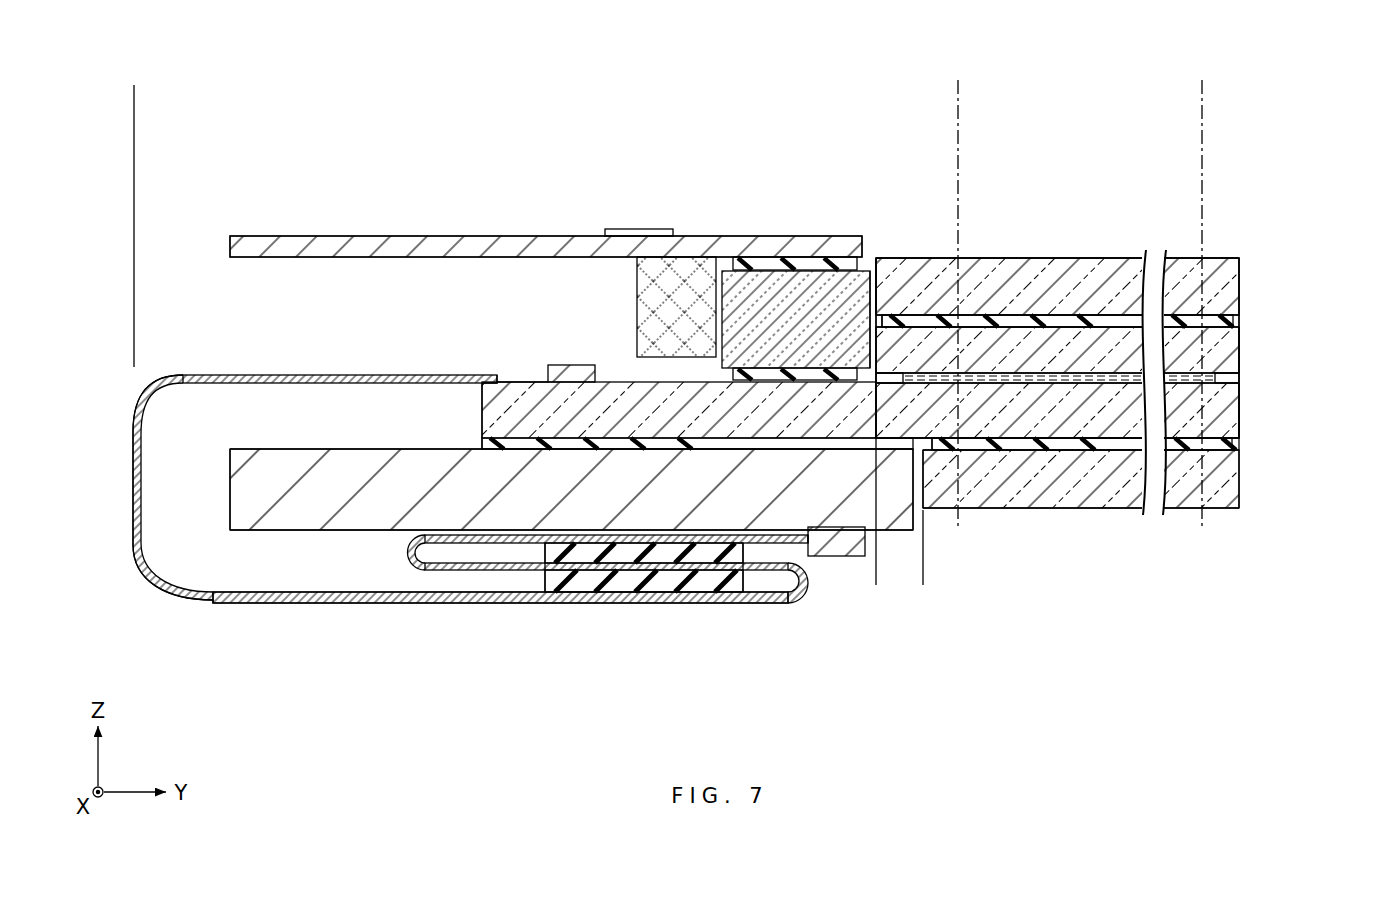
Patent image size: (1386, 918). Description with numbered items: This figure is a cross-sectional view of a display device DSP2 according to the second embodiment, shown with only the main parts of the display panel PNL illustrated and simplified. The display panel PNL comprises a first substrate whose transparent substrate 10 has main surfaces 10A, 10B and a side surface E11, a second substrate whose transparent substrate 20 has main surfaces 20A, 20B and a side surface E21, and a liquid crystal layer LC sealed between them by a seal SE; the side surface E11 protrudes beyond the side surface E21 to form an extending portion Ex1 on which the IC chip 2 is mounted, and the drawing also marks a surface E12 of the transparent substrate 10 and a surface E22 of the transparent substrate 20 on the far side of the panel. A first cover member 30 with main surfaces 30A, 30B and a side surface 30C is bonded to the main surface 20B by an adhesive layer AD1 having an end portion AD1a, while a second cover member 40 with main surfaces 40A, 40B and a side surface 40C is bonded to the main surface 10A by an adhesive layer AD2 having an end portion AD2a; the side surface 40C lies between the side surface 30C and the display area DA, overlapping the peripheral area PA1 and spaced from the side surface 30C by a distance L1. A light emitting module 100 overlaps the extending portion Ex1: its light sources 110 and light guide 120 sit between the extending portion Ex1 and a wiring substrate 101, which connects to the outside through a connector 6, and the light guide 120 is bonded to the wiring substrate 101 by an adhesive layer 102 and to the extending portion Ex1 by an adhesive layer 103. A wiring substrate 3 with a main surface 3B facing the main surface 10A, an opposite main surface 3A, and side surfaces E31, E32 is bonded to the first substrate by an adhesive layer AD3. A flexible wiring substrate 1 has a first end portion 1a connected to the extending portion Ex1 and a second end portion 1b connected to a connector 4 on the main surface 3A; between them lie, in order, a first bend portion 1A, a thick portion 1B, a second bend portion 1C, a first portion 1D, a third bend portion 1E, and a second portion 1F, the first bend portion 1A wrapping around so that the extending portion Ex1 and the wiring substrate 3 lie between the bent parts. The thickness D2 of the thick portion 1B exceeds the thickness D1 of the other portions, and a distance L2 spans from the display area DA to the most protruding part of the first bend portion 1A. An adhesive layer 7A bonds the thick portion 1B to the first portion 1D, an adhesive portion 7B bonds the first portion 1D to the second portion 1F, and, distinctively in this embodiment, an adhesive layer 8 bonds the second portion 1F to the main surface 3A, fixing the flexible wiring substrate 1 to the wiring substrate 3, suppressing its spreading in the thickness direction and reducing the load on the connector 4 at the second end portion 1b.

The flexible wiring substrate 1 is at (405, 376).
The first end portion 1a is at (488, 368).
The second end portion 1b is at (793, 548).
The first bend portion 1A is at (125, 375).
The thick portion 1B is at (214, 606).
The second bend portion 1C is at (811, 563).
The first portion 1D is at (713, 570).
The third bend portion 1E is at (406, 535).
The second portion 1F is at (477, 543).
The IC chip 2 is at (567, 364).
The wiring substrate 3 is at (310, 456).
The main surface 3A is at (355, 532).
The main surface 3B is at (348, 441).
The connector 4 is at (843, 558).
The connector 6 is at (637, 230).
The adhesive layer 7A is at (630, 584).
The adhesive portion 7B is at (582, 555).
The adhesive layer 8 is at (537, 543).
The transparent substrate 10 is at (1232, 421).
The main surface 10A is at (1123, 449).
The main surface 10B is at (1112, 381).
The transparent substrate 20 is at (1230, 349).
The main surface 20A is at (1188, 386).
The main surface 20B is at (1008, 325).
The first cover member 30 is at (1230, 283).
The main surface 30A is at (1086, 327).
The main surface 30B is at (1063, 257).
The side surface 30C is at (872, 262).
The second cover member 40 is at (1214, 512).
The main surface 40A is at (1067, 512).
The main surface 40B is at (1036, 444).
The side surface 40C is at (920, 485).
The light emitting module 100 is at (720, 222).
The wiring substrate 101 is at (462, 245).
The adhesive layer 102 is at (733, 263).
The adhesive layer 103 is at (740, 375).
The light sources 110 is at (652, 293).
The light guide 120 is at (740, 322).
The adhesive layer AD1 is at (1235, 320).
The end portion AD1a is at (893, 313).
The adhesive layer AD2 is at (1233, 448).
The end portion AD2a is at (941, 458).
The adhesive layer AD3 is at (630, 449).
The display area DA is at (1202, 72).
The peripheral area PA1 is at (958, 72).
The display device DSP2 is at (1232, 175).
The display panel PNL is at (1300, 292).
The side surface E11 is at (482, 410).
The second end of substrate E12 is at (1245, 401).
The side surface E21 is at (866, 342).
The second end of second member E22 is at (1243, 338).
The side surface E31 is at (230, 470).
The side surface E32 is at (920, 516).
The extending portion Ex1 is at (528, 360).
The seal SE is at (903, 384).
The liquid crystal layer LC is at (995, 384).
The distance L1 is at (882, 572).
The distance L2 is at (952, 103).
The thickness D1 is at (262, 406).
The thickness D2 is at (262, 625).